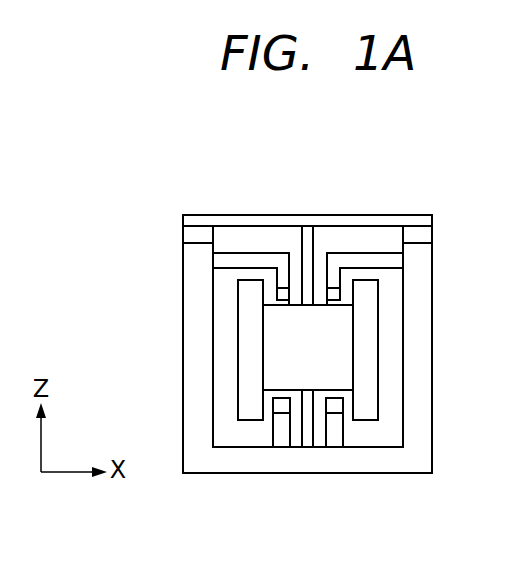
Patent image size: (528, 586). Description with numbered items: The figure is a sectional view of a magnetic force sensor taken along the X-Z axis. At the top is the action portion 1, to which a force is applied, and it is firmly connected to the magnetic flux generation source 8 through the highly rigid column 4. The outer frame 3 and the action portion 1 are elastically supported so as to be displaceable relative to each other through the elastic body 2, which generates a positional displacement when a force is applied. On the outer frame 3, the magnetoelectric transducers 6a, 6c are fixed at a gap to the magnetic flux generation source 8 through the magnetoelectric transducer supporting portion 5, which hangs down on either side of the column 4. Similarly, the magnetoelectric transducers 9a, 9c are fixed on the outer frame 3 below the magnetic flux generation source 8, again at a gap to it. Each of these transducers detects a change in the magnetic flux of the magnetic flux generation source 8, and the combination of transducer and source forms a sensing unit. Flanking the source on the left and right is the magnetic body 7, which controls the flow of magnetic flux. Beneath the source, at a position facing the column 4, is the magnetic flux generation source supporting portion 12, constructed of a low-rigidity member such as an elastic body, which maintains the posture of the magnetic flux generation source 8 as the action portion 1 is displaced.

The action portion 1 is at (411, 213).
The elastic body 2 is at (450, 238).
The outer frame 3 is at (428, 465).
The column 4 is at (307, 247).
The magnetoelectric transducer supporting portion 5 is at (354, 260).
The magnetoelectric transducer 6a is at (285, 296).
The magnetoelectric transducer 6c is at (337, 291).
The magnetic body 7 is at (363, 363).
The magnetic flux generation source 8 is at (337, 345).
The magnetoelectric transducer 9a is at (281, 408).
The magnetoelectric transducer 9c is at (335, 408).
The magnetic flux generation source supporting portion 12 is at (307, 435).